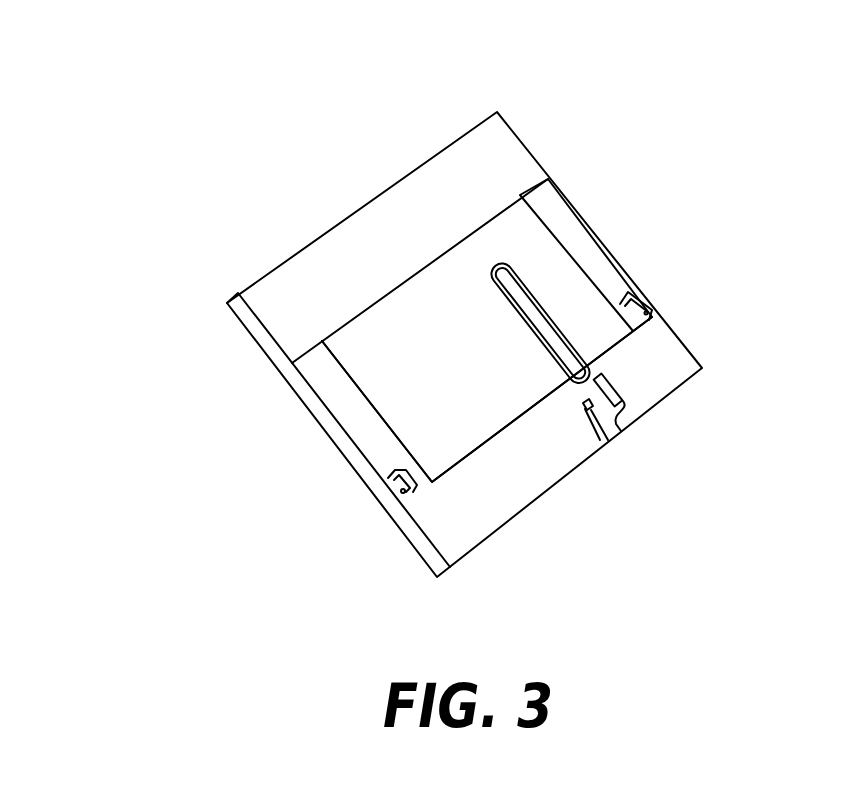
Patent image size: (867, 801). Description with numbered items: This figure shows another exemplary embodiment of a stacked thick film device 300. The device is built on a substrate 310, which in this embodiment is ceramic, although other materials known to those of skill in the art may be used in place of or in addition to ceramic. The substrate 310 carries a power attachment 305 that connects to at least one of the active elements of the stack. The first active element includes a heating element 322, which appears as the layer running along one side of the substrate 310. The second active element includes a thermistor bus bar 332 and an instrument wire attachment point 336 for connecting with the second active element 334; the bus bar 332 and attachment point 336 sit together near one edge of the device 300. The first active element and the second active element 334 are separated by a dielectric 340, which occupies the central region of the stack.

The stacked thick film device 300 is at (152, 304).
The power attachment 305 is at (652, 285).
The substrate 310 is at (516, 165).
The heating element 322 is at (345, 407).
The thermistor bus bar 332 is at (542, 286).
The second active element 334 is at (485, 258).
The instrument wire attachment point 336 is at (646, 423).
The dielectric 340 is at (426, 364).